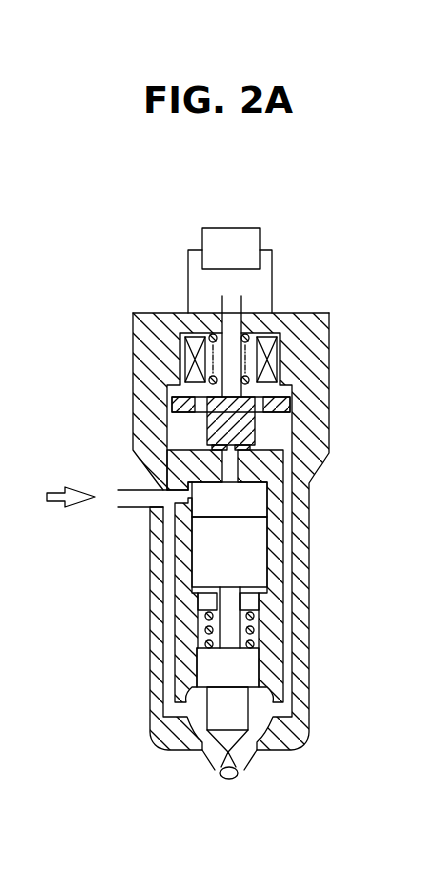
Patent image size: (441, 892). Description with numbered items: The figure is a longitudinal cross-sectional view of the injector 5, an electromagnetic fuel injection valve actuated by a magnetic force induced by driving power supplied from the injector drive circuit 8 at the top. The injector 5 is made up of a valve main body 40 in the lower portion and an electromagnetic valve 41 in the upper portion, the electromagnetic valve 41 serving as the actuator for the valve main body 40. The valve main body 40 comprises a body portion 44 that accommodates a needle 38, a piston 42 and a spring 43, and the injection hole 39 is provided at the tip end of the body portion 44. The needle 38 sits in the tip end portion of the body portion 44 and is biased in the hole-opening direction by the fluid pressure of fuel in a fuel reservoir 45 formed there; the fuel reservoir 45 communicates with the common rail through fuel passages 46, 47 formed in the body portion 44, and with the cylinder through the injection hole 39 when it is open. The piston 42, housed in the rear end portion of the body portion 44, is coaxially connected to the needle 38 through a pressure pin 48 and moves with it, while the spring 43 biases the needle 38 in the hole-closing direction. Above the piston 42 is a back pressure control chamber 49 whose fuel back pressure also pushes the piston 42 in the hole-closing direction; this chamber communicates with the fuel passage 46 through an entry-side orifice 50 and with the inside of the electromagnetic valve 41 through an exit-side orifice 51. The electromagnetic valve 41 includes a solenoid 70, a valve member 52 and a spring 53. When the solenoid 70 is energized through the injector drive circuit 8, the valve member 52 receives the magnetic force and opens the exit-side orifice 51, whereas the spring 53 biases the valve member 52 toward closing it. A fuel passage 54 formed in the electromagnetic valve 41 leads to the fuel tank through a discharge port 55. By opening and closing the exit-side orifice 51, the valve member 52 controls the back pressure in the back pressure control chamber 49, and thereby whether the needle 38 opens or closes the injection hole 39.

The injector 5 is at (140, 260).
The injector drive circuit 8 is at (238, 238).
The discharge port 55 is at (230, 310).
The solenoid 70 is at (255, 368).
The spring 53 is at (288, 398).
The valve member 52 is at (258, 410).
The electromagnetic valve 41 is at (400, 305).
The fuel passage 54 is at (286, 436).
The exit-side orifice 51 is at (168, 432).
The entry-side orifice 50 is at (153, 487).
The fuel passage 46 is at (158, 500).
The back pressure control chamber 49 is at (253, 498).
The piston 42 is at (253, 568).
The spring 43 is at (242, 622).
The pressure pin 48 is at (235, 628).
The needle 38 is at (248, 668).
The body portion 44 is at (287, 715).
The valve main body 40 is at (383, 722).
The fuel passage 47 is at (166, 594).
The fuel reservoir 45 is at (197, 723).
The injection hole 39 is at (220, 770).